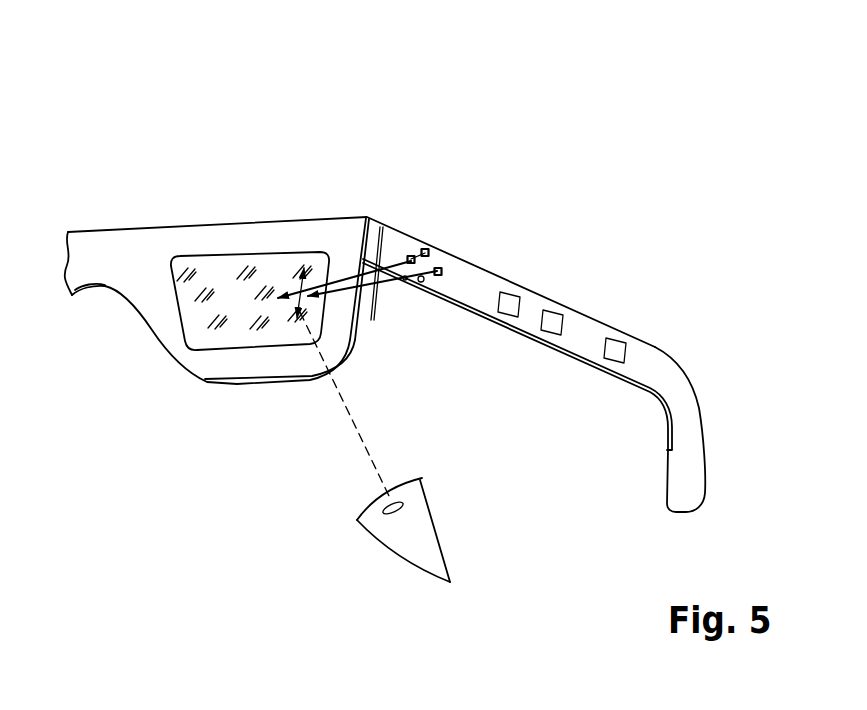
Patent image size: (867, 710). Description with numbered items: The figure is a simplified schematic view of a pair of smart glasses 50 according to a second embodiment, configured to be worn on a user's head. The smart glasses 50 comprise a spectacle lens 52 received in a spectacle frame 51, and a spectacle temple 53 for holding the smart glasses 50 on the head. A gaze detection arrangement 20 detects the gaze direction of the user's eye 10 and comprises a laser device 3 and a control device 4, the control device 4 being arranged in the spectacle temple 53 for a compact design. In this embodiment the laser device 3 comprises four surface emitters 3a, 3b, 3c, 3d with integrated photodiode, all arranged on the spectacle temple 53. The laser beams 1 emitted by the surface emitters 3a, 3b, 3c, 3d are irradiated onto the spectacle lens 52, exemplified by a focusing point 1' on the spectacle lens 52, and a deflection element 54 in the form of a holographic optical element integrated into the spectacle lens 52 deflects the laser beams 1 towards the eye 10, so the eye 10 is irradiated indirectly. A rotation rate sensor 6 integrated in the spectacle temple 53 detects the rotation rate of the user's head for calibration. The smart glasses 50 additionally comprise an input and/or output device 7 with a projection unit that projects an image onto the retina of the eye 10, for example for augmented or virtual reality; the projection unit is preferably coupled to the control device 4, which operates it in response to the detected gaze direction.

The laser beams 1 is at (372, 313).
The focusing point 1' is at (307, 235).
The laser device 3 is at (117, 132).
The surface emitter 3a is at (438, 272).
The surface emitter 3b is at (424, 280).
The surface emitter 3c is at (426, 252).
The surface emitter 3d is at (410, 256).
The control device 4 is at (612, 350).
The rotation rate sensor 6 is at (547, 322).
The input and/or output device 7 is at (505, 304).
The eye 10 is at (390, 560).
The gaze detection arrangement 20 is at (415, 197).
The smart glasses 50 is at (606, 126).
The spectacle frame 51 is at (102, 254).
The spectacle lens 52 is at (197, 325).
The spectacle temple 53 is at (660, 377).
The deflection element 54 is at (255, 284).